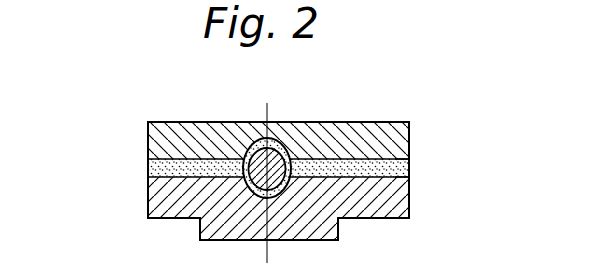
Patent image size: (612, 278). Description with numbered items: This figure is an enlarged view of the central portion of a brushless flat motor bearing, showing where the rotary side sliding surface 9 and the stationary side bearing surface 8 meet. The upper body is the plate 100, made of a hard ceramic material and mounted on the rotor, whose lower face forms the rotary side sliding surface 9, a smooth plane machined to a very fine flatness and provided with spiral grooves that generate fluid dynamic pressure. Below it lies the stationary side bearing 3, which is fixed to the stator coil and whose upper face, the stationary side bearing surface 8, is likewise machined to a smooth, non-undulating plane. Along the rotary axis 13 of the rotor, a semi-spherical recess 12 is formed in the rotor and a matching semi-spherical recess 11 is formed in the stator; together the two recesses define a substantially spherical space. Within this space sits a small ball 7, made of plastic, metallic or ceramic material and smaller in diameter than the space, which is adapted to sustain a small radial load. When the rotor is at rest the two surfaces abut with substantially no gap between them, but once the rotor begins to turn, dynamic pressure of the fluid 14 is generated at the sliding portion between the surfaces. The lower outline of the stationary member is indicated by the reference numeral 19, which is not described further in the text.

The plate 100 is at (338, 122).
The stationary side bearing 3 is at (392, 218).
The ball 7 is at (250, 197).
The stationary side bearing surface 8 is at (405, 172).
The rotary side sliding surface 9 is at (401, 160).
The semi-spherical recess 11 is at (283, 195).
The semi-spherical recess 12 is at (279, 143).
The rotary axis 13 is at (258, 257).
The fluid 14 is at (156, 170).
The bottom surface 19 is at (152, 218).